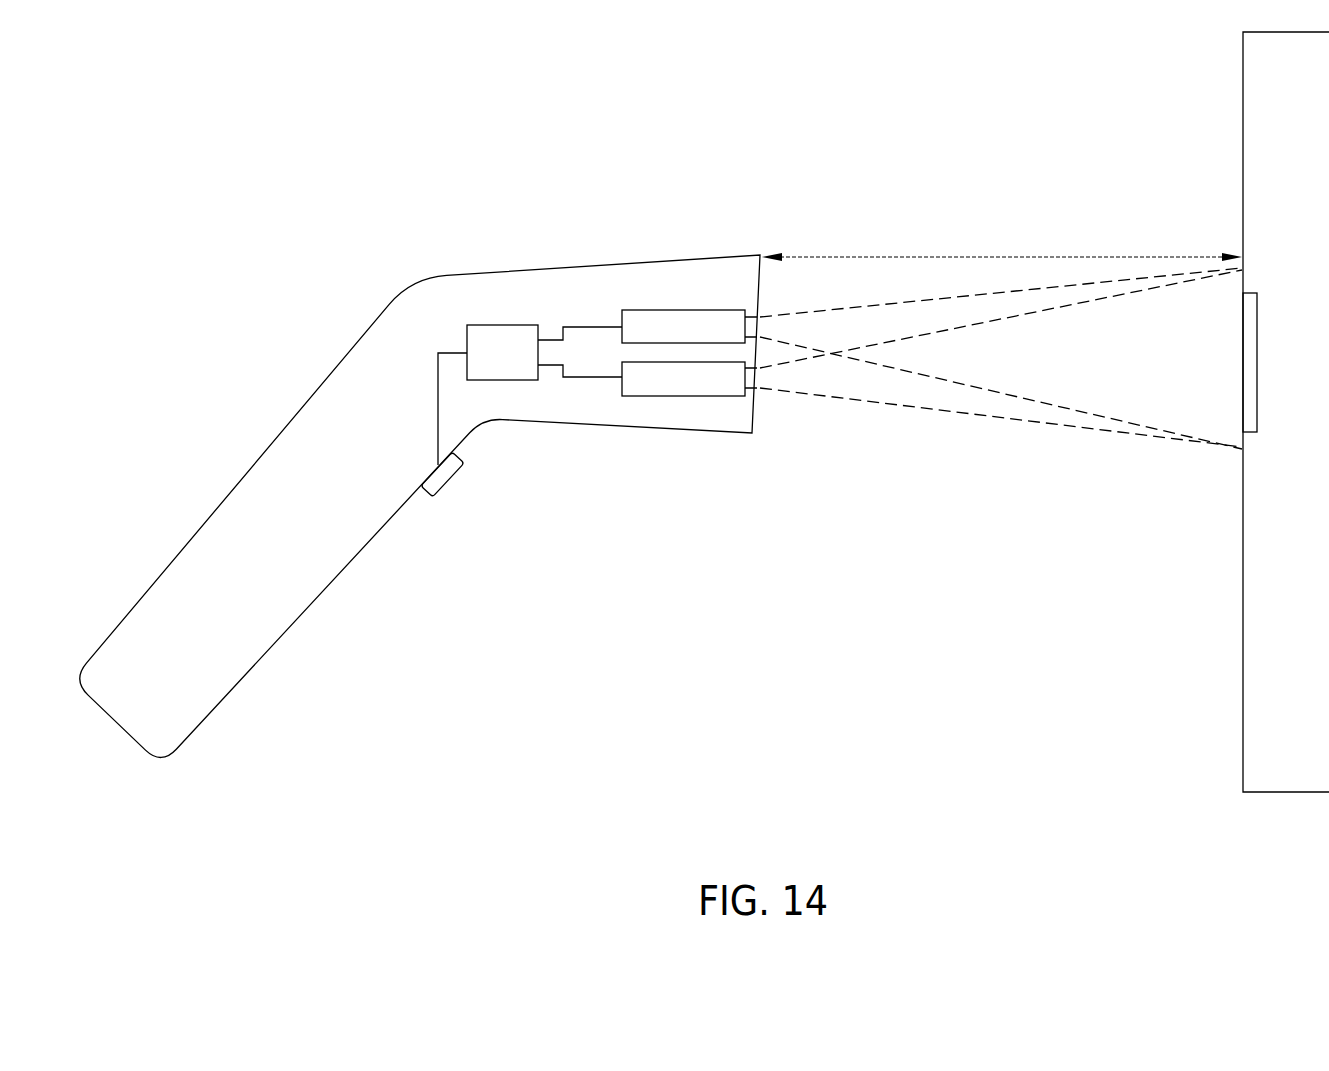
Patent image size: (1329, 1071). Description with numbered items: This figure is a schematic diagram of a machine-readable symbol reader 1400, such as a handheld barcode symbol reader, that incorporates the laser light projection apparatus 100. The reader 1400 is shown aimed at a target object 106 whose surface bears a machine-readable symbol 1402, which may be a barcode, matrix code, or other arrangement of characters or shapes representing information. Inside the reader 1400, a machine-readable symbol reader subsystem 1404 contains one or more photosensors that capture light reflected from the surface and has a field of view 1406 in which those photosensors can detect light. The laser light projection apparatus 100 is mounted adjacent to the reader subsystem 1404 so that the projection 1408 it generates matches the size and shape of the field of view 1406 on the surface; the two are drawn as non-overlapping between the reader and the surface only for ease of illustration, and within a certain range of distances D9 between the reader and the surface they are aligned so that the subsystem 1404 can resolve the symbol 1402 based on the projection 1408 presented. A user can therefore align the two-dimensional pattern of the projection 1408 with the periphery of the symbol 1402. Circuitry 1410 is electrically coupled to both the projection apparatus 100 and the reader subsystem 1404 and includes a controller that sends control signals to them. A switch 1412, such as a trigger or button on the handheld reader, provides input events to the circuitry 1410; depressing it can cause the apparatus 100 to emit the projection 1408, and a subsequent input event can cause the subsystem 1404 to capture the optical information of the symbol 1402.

The machine-readable symbol reader 1400 is at (420, 506).
The circuitry 1410 is at (532, 362).
The machine-readable symbol reader subsystem 1404 is at (718, 338).
The laser light projection apparatus 100 is at (706, 390).
The switch 1412 is at (447, 478).
The field of view 1406 is at (852, 308).
The projection 1408 is at (810, 398).
The range of distances D9 is at (980, 257).
The target object 106 is at (1322, 81).
The machine-readable symbol 1402 is at (1242, 393).